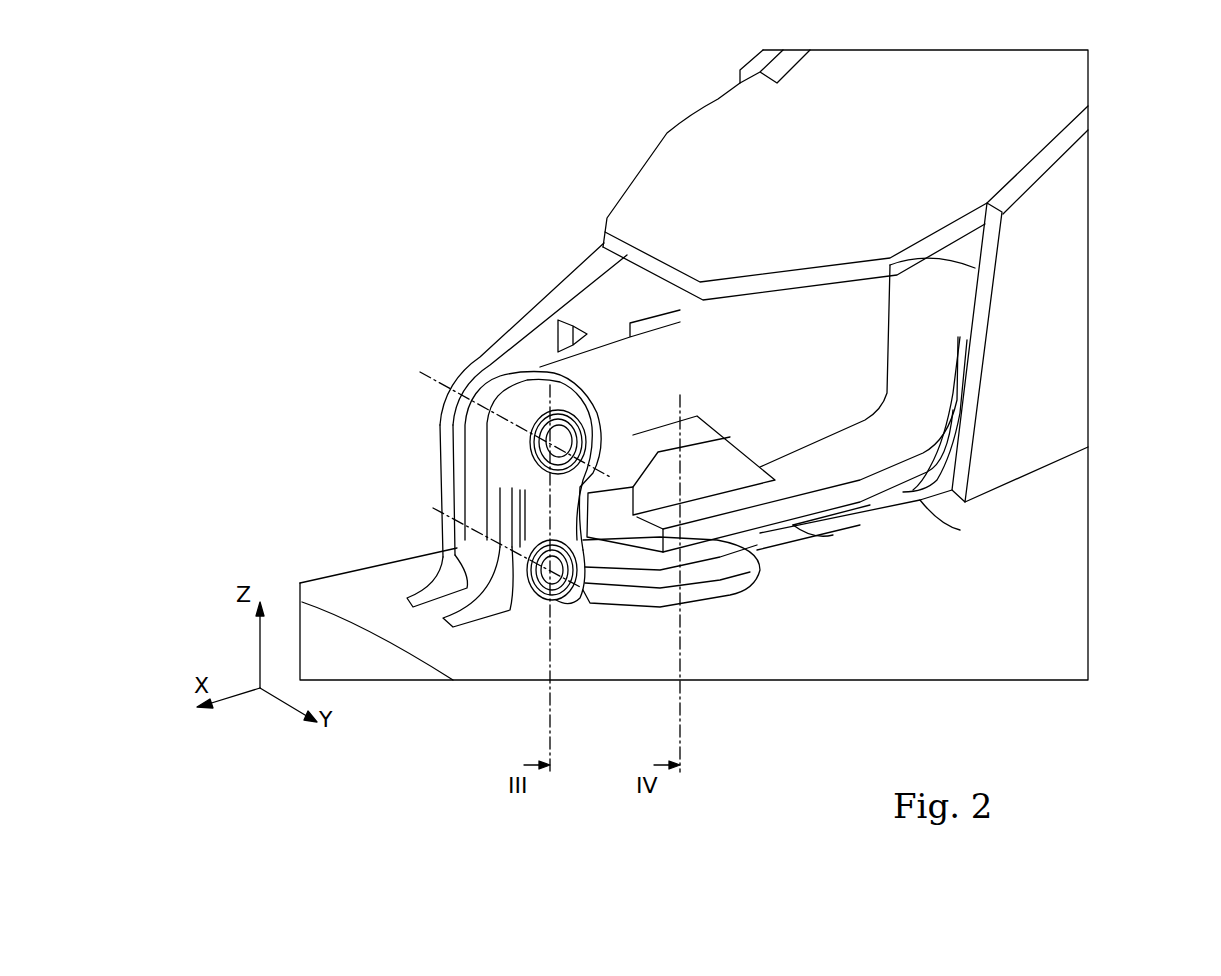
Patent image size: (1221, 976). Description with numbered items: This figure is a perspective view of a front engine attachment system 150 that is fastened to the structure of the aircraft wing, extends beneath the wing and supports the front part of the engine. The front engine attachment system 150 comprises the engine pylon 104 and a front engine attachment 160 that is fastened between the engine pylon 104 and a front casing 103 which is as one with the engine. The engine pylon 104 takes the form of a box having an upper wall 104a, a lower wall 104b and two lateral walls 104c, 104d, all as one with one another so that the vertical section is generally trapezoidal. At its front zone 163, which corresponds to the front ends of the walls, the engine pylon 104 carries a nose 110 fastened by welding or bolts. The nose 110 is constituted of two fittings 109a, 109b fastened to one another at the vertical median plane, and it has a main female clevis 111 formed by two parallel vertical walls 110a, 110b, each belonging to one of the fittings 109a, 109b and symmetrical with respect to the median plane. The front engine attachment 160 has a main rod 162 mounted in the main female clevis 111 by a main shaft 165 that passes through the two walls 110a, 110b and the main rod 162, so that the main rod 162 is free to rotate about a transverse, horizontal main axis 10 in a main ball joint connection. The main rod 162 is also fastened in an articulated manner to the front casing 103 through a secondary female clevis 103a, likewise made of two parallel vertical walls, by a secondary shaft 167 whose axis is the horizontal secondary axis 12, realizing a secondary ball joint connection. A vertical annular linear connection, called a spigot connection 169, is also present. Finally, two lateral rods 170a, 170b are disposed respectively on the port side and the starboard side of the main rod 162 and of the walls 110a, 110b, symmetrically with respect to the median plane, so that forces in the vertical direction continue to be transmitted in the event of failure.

The main axis 10 is at (405, 364).
The secondary axis 12 is at (580, 593).
The front casing 103 is at (307, 620).
The secondary female clevis 103a is at (437, 553).
The engine pylon 104 is at (1128, 155).
The upper wall 104a is at (845, 191).
The lower wall 104b is at (920, 498).
The lateral wall 104c is at (1020, 352).
The lateral wall 104d is at (740, 78).
The fitting 109a is at (593, 280).
The fitting 109b is at (647, 300).
The nose 110 is at (445, 213).
The wall of main female clevis 110a is at (510, 343).
The wall of main female clevis 110b is at (597, 353).
The main female clevis 111 is at (557, 328).
The front engine attachment system 150 is at (355, 140).
The front engine attachment 160 is at (293, 290).
The main rod 162 is at (480, 500).
The front zone 163 is at (480, 148).
The main shaft 165 is at (580, 420).
The secondary shaft 167 is at (580, 588).
The spigot connection 169 is at (790, 592).
The lateral rod 170a is at (510, 590).
The lateral rod 170b is at (447, 430).